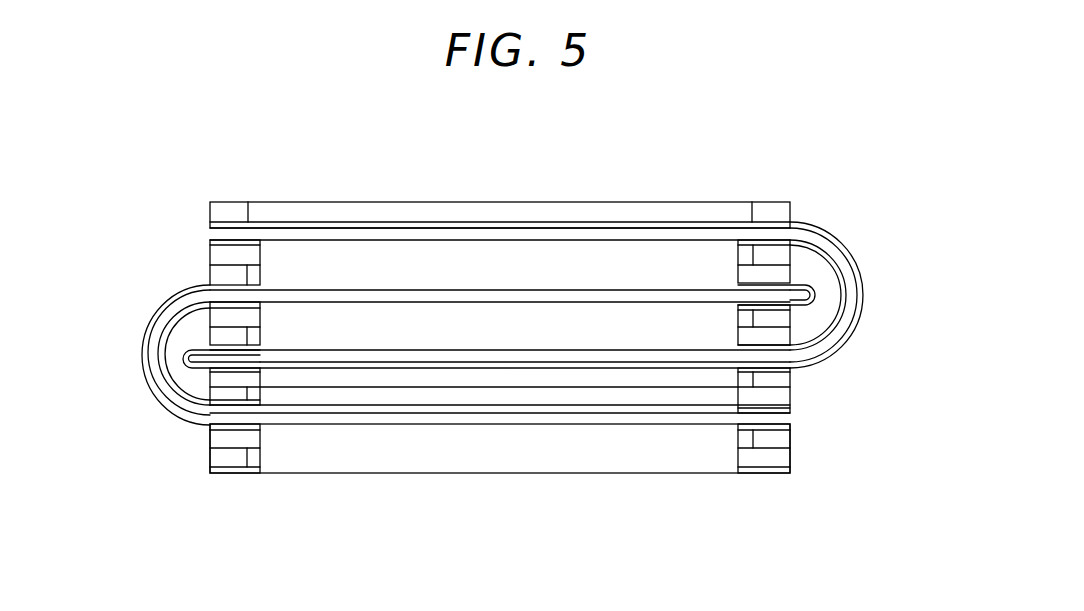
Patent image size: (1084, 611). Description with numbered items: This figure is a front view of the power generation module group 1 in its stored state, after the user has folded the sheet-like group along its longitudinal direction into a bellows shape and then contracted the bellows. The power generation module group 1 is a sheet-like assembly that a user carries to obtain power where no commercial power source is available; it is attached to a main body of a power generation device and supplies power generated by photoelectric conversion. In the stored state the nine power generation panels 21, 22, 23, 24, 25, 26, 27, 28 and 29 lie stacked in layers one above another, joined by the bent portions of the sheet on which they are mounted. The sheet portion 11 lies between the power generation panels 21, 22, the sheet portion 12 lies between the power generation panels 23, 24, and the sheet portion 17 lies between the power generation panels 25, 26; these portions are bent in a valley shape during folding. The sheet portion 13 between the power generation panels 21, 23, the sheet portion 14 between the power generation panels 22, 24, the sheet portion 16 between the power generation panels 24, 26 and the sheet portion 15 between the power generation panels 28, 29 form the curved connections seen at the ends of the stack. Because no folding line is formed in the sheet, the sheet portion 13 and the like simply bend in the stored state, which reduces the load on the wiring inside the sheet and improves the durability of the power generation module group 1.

The power generation module group 1 is at (783, 100).
The sheet portion 11 is at (680, 462).
The sheet portion 12 is at (450, 330).
The sheet portion 13 is at (156, 332).
The sheet portion 14 is at (165, 352).
The sheet portion 15 is at (802, 226).
The sheet portion 16 is at (858, 293).
The sheet portion 17 is at (455, 265).
The power generation panel 21 is at (782, 460).
The power generation panel 22 is at (223, 440).
The power generation panel 23 is at (227, 318).
The power generation panel 24 is at (775, 339).
The power generation panel 25 is at (228, 275).
The power generation panel 26 is at (750, 260).
The power generation panel 27 is at (790, 400).
The power generation panel 28 is at (222, 382).
The power generation panel 29 is at (605, 218).